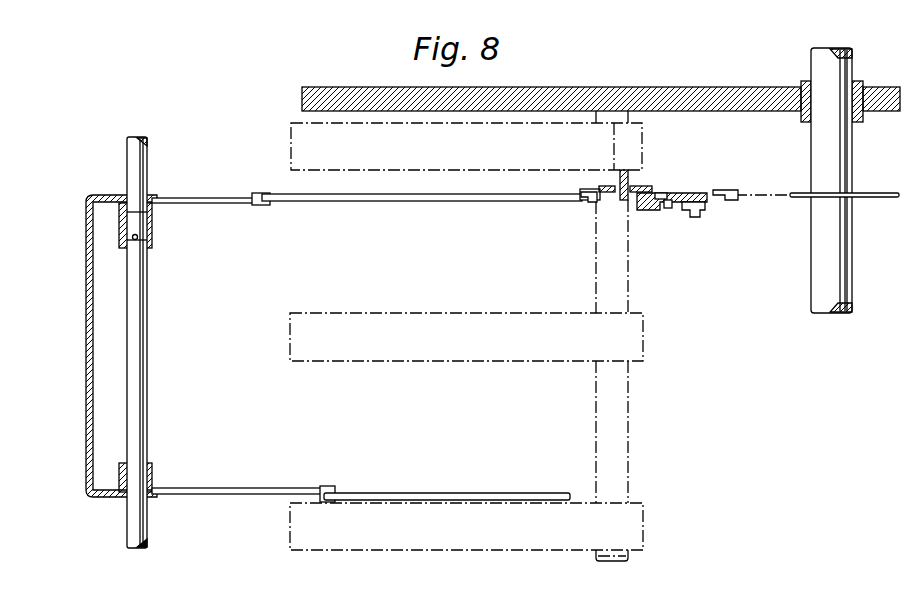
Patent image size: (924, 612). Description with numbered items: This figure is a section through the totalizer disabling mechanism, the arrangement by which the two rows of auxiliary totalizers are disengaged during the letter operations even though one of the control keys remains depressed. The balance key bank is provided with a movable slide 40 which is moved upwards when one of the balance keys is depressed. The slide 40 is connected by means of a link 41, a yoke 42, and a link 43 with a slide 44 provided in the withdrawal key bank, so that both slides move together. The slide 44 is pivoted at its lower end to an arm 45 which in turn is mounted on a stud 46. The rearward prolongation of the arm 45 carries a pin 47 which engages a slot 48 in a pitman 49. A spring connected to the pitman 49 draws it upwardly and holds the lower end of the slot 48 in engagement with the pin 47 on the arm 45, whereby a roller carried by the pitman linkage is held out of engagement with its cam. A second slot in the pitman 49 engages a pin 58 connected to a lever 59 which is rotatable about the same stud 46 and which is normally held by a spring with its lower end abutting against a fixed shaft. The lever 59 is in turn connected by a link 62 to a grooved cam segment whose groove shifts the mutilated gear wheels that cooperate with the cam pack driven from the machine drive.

The slide 40 is at (425, 493).
The link 41 is at (230, 488).
The yoke 42 is at (86, 318).
The link 43 is at (216, 204).
The slide 44 is at (340, 201).
The arm 45 is at (598, 203).
The stud 46 is at (617, 176).
The pin 47 is at (660, 211).
The slot 48 is at (668, 209).
The pitman 49 is at (702, 203).
The pin 58 is at (692, 218).
The lever 59 is at (663, 198).
The link 62 is at (793, 198).